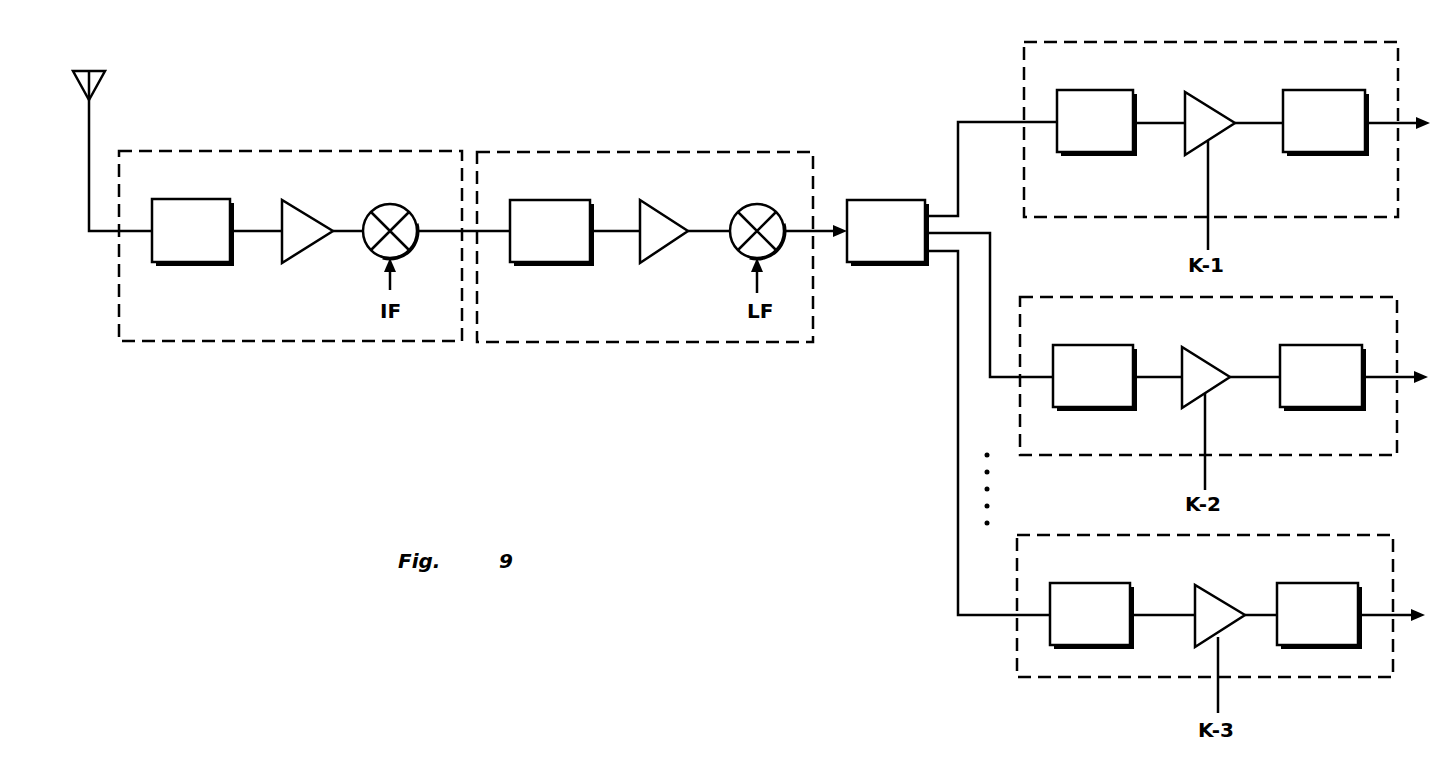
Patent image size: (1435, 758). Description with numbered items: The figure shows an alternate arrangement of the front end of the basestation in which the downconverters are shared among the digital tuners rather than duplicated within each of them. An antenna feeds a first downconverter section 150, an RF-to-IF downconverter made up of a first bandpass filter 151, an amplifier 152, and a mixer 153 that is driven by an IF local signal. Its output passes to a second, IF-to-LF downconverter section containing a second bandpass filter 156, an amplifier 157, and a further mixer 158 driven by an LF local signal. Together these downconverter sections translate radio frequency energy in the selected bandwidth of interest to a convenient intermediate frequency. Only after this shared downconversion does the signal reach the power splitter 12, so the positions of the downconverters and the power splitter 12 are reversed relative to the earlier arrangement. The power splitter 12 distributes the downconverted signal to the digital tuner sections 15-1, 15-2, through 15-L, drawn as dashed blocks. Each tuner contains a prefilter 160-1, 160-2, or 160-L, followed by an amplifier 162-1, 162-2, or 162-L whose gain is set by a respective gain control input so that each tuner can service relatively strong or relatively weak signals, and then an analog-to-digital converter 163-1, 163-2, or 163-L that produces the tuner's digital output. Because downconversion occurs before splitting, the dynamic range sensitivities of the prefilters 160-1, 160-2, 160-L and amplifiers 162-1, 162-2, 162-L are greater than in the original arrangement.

The first downconverter section 150 is at (233, 151).
The first bandpass filter 151 is at (170, 199).
The amplifier 152 is at (305, 213).
The mixer 153 is at (397, 207).
The second bandpass filter 156 is at (528, 200).
The amplifier 157 is at (658, 210).
The mixer 158 is at (757, 210).
The power splitter 12 is at (868, 200).
The digital tuner section 15-1 is at (1228, 42).
The digital tuner section 15-2 is at (1297, 297).
The digital tuner section 15-L is at (1297, 535).
The prefilter 160-1 is at (1078, 90).
The prefilter 160-2 is at (1068, 345).
The prefilter 160-L is at (1072, 583).
The amplifier 162-1 is at (1210, 100).
The amplifier 162-2 is at (1207, 357).
The amplifier 162-L is at (1235, 576).
The A/D converter 163-1 is at (1307, 90).
The A/D converter 163-2 is at (1302, 345).
The A/D converter 163-L is at (1305, 583).